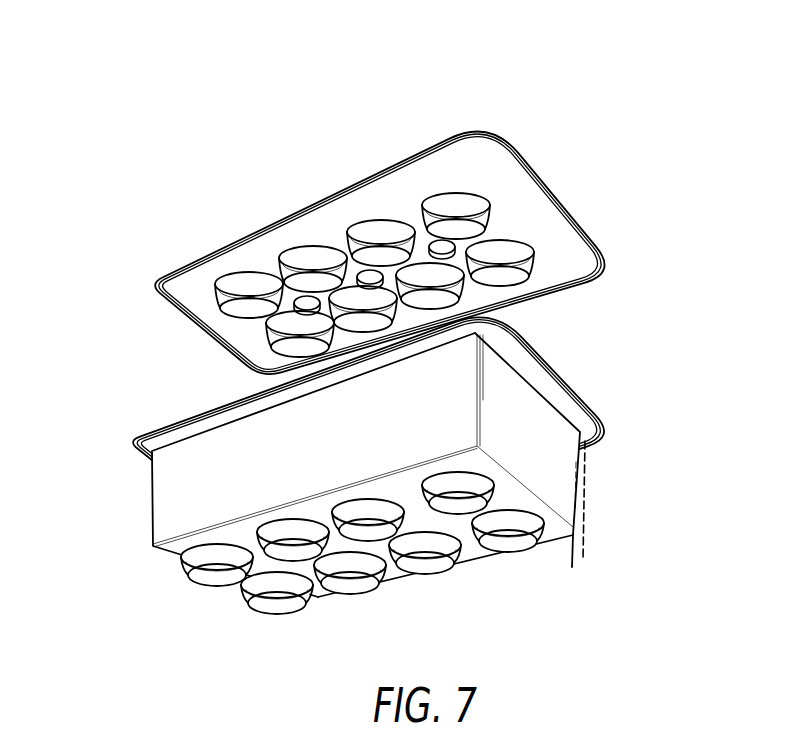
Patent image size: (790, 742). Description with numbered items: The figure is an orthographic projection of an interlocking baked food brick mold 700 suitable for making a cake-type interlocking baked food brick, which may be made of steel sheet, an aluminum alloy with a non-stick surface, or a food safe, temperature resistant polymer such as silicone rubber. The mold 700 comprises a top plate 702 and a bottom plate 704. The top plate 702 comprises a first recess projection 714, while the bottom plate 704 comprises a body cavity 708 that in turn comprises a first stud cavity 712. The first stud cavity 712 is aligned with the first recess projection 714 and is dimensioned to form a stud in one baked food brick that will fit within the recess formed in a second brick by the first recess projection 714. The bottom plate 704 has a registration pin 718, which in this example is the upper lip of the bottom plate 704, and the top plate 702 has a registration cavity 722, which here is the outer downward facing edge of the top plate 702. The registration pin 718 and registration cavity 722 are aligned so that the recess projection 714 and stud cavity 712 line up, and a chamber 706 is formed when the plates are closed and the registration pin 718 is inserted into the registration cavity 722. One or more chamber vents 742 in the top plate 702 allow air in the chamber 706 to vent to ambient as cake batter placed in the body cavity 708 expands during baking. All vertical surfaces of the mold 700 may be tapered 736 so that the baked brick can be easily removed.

The interlocking baked food brick mold 700 is at (258, 92).
The top plate 702 is at (224, 246).
The bottom plate 704 is at (152, 476).
The chamber 706 is at (195, 380).
The body cavity 708 is at (170, 503).
The first stud cavity 712 is at (200, 580).
The first recess projection 714 is at (292, 267).
The registration pin 718 is at (566, 383).
The registration cavity 722 is at (532, 172).
The tapered vertical surfaces 736 is at (586, 531).
The chamber vent 742 is at (436, 245).